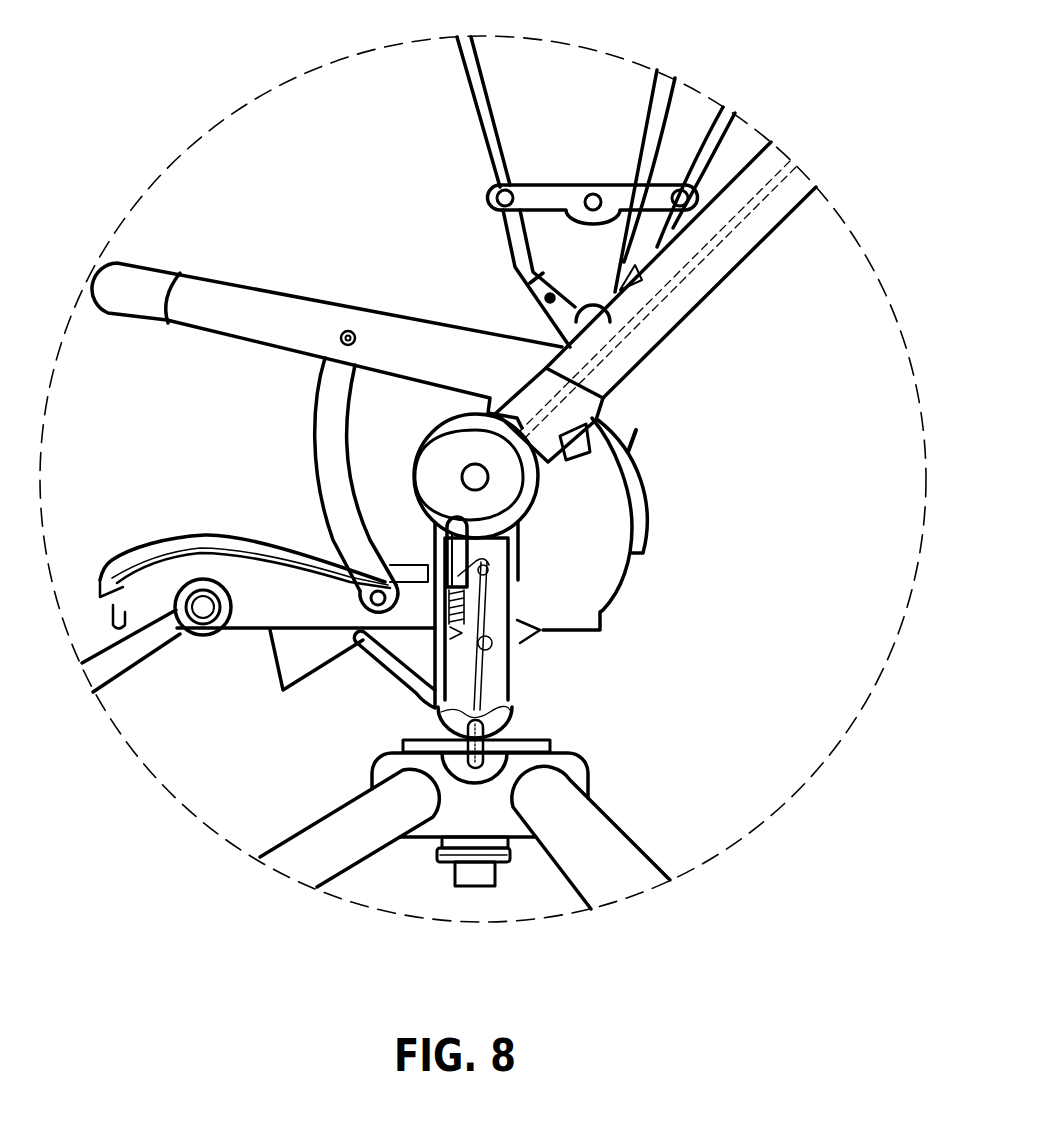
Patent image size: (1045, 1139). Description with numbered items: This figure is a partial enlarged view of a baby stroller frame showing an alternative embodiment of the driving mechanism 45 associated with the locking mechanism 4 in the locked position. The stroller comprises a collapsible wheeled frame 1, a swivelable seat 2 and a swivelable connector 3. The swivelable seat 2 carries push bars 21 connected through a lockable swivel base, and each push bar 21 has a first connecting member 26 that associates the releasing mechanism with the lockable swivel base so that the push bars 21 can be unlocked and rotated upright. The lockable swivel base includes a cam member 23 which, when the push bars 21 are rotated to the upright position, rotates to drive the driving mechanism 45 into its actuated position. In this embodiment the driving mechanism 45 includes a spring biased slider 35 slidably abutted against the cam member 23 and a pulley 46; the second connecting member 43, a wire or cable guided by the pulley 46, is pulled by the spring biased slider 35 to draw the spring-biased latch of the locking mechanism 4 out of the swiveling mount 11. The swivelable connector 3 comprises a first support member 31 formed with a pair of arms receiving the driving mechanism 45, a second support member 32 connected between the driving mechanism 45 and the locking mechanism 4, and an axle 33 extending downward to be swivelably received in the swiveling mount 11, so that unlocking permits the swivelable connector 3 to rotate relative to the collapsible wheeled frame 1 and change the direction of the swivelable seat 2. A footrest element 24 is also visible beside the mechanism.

The collapsible wheeled frame 1 is at (554, 865).
The swivelable seat 2 is at (508, 324).
The swivelable connector 3 is at (544, 575).
The locking mechanism 4 is at (450, 768).
The swiveling mount 11 is at (460, 822).
The push bars 21 is at (652, 326).
The cam member 23 is at (442, 468).
The footrest 24 is at (286, 660).
The first connecting member 26 is at (762, 203).
The first support member 31 is at (513, 705).
The second support member 32 is at (388, 665).
The axle 33 is at (470, 878).
The spring biased slider 35 is at (448, 561).
The second connecting member 43 is at (472, 668).
The driving mechanism 45 is at (585, 585).
The pulley 46 is at (484, 559).